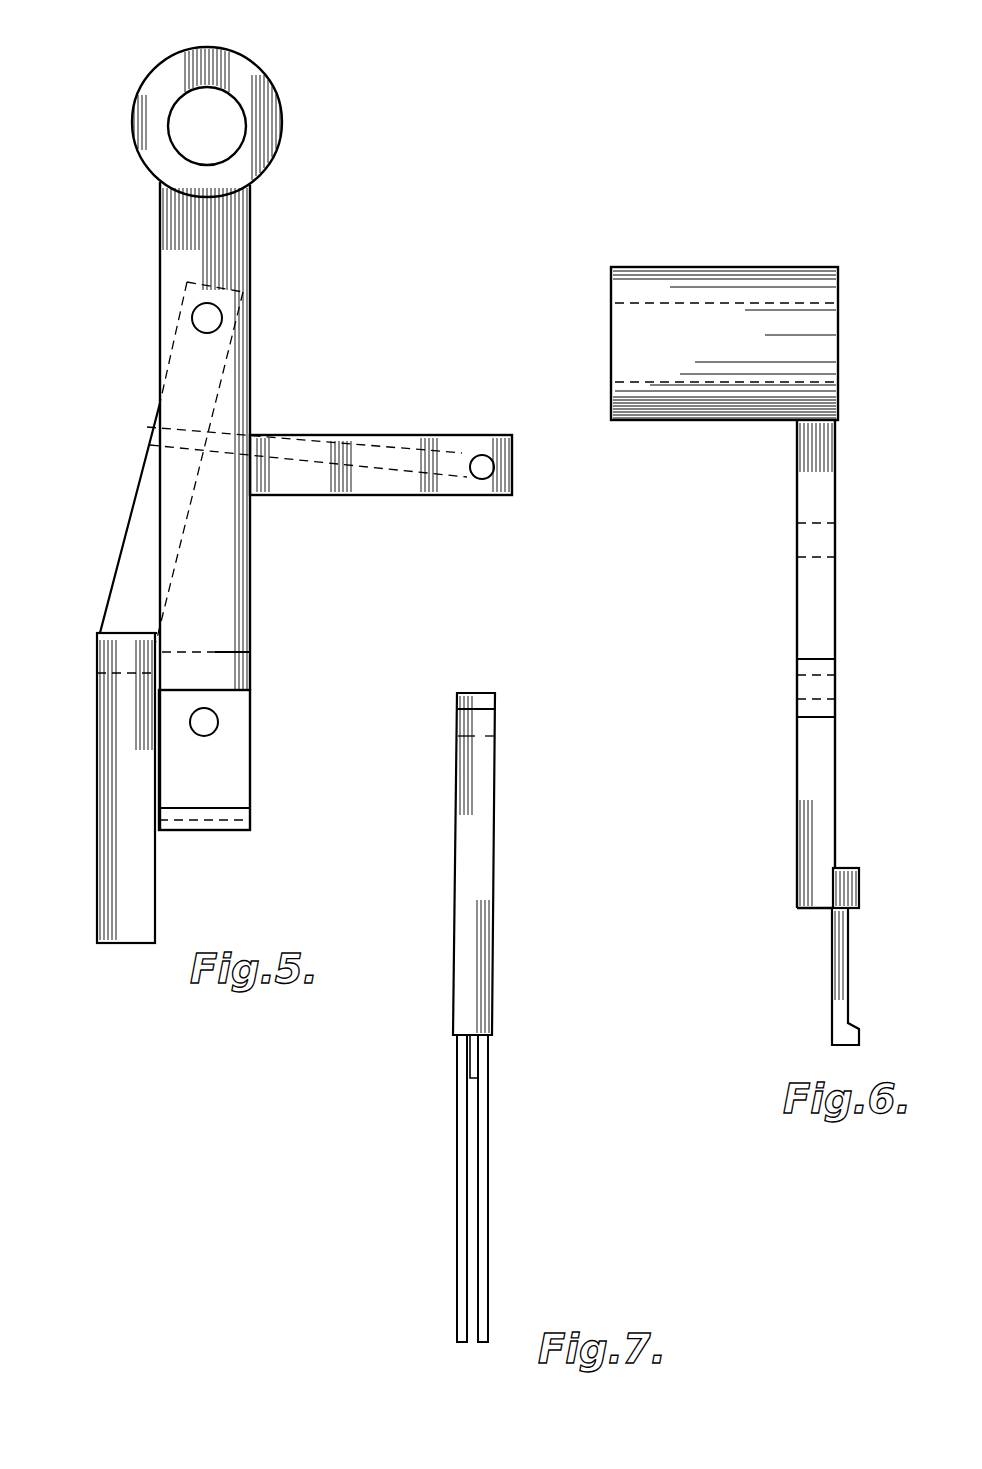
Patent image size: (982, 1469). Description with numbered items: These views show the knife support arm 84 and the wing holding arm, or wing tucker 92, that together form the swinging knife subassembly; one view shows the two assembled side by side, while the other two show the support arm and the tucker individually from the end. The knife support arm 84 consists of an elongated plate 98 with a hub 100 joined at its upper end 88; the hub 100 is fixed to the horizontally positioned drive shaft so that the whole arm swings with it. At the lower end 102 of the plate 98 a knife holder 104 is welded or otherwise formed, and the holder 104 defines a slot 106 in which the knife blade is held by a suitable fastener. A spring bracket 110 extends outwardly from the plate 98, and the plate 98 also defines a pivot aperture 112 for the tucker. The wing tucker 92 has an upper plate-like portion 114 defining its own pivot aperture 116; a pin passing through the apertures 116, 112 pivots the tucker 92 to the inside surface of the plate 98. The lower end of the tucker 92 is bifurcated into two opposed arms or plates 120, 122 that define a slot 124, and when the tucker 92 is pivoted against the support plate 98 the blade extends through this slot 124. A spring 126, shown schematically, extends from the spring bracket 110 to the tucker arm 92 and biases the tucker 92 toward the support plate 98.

In FIG. 5, the knife support arm 84 is at (291, 277).
In FIG. 5, the upper end 88 is at (258, 86).
In FIG. 6, the upper end 88 is at (741, 248).
In FIG. 5, the wing tucker 92 is at (108, 560).
In FIG. 7, the wing tucker 92 is at (480, 684).
In FIG. 5, the elongated plate 98 is at (205, 506).
In FIG. 6, the elongated plate 98 is at (825, 454).
In FIG. 5, the hub 100 is at (266, 133).
In FIG. 6, the hub 100 is at (633, 278).
In FIG. 5, the lower end 102 is at (266, 727).
In FIG. 6, the lower end 102 is at (800, 885).
In FIG. 5, the knife holder 104 is at (230, 783).
In FIG. 6, the knife holder 104 is at (868, 872).
In FIG. 6, the slot 106 is at (845, 979).
In FIG. 5, the spring bracket 110 is at (433, 435).
In FIG. 5, the pivot aperture 112 is at (205, 318).
In FIG. 6, the pivot aperture 112 is at (800, 540).
In FIG. 5, the upper plate-like portion 114 is at (115, 595).
In FIG. 7, the upper plate-like portion 114 is at (478, 870).
In FIG. 7, the pivot aperture 116 is at (488, 722).
In FIG. 7, the arm 120 is at (458, 1108).
In FIG. 5, the arm 122 is at (112, 842).
In FIG. 7, the arm 122 is at (484, 1093).
In FIG. 7, the slot 124 is at (472, 1208).
In FIG. 5, the spring 126 is at (325, 435).